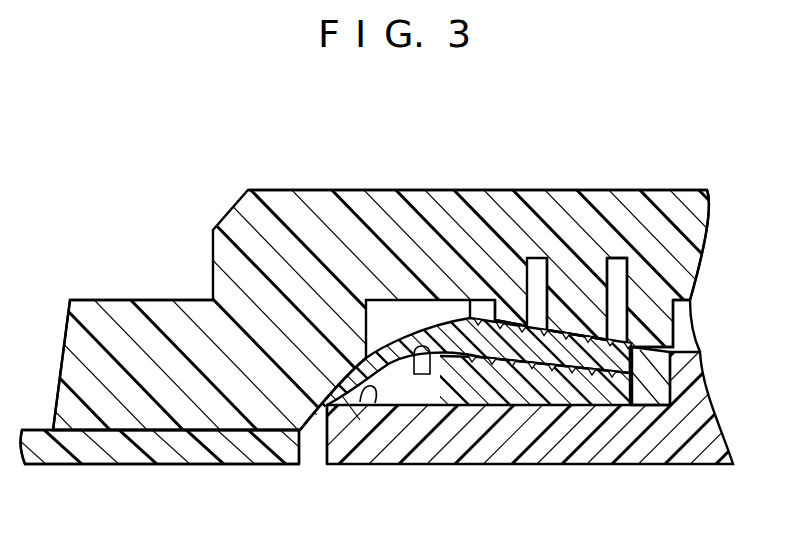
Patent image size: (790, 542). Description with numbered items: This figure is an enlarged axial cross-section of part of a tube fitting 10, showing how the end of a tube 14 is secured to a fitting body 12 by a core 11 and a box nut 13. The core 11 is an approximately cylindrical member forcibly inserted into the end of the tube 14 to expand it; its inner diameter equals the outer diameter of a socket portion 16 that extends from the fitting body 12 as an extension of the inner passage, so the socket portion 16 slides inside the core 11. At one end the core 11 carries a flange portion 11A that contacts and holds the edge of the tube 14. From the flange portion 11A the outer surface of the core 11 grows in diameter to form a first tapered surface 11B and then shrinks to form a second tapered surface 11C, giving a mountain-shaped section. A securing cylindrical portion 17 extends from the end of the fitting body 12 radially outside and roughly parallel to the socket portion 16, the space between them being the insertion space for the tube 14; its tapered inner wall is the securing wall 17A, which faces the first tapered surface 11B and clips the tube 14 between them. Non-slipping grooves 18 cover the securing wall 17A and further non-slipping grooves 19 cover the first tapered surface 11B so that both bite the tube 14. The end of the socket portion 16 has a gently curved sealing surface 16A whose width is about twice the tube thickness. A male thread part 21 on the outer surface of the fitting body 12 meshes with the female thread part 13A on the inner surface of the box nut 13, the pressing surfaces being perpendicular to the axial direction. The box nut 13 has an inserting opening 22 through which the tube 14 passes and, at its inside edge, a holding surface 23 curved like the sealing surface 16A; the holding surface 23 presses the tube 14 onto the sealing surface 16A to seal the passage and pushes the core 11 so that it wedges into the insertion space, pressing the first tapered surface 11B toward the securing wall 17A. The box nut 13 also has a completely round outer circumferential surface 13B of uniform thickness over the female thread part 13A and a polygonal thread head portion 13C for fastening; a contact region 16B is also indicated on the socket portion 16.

The connector terminal fixing structure 10 is at (458, 160).
The core 11 is at (594, 395).
The flange portion 11A is at (695, 350).
The first tapered surface 11B is at (652, 383).
The second tapered surface 11C is at (442, 362).
The fitting body 12 is at (706, 393).
The box nut 13 is at (313, 197).
The female thread part 13A is at (693, 304).
The outer circumferential surface 13B is at (366, 193).
The thread head portion 13C is at (120, 298).
The tube 14 is at (135, 522).
The socket portion 16 is at (541, 447).
The sealing surface 16A is at (313, 445).
The projection of elastic member 16B is at (372, 400).
The securing cylindrical portion 17 is at (573, 295).
The securing wall 17A is at (486, 300).
The grooves 18 is at (645, 275).
The non-slipping grooves 19 is at (583, 378).
The male thread part 21 is at (622, 295).
The inserting opening 22 is at (200, 433).
The holding surface 23 is at (343, 397).